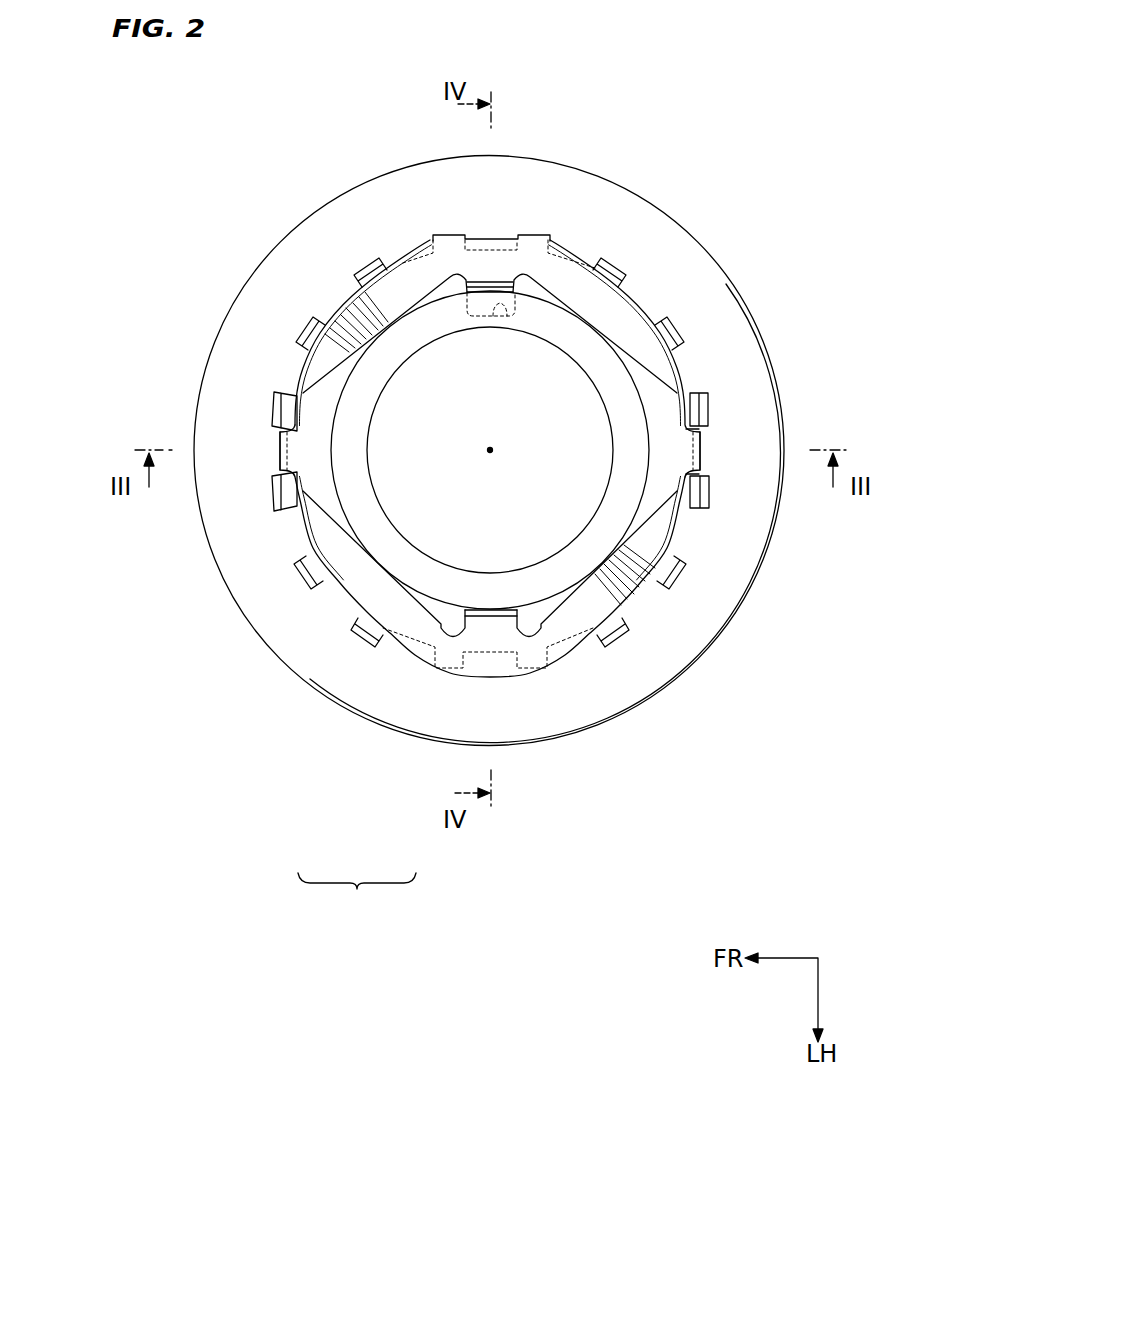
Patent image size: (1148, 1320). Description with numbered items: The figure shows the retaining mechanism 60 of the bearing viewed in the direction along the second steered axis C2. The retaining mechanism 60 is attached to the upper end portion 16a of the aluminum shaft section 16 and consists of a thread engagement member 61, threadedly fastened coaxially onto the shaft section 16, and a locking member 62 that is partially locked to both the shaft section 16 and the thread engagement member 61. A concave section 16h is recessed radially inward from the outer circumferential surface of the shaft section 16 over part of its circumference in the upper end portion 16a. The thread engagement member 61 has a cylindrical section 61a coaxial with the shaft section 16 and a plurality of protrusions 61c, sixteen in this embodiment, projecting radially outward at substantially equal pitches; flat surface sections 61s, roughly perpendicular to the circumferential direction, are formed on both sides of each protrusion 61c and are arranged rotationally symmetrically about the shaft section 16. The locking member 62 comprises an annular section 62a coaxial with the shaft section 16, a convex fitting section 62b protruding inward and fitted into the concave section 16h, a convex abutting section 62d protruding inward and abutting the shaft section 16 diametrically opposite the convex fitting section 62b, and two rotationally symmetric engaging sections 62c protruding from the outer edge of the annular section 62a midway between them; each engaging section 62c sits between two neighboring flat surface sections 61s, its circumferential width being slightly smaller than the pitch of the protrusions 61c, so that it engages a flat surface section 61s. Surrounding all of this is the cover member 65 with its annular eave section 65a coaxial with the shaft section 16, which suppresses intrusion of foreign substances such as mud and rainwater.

The shaft section 16 is at (598, 388).
The upper end portion of the shaft section 16a is at (610, 340).
The concave section 16h is at (507, 318).
The retaining mechanism 60 is at (357, 898).
The thread engagement member 61 is at (364, 646).
The cylindrical section 61a is at (708, 493).
The protrusions 61c is at (708, 504).
The flat surface sections 61s is at (710, 430).
The locking member 62 is at (483, 684).
The annular section 62a is at (657, 383).
The convex fitting section 62b is at (483, 303).
The engaging section 62c is at (277, 448).
The convex abutting section 62d is at (487, 608).
The cover member 65 is at (712, 672).
The annular eave section 65a is at (687, 622).
The second steered axis C2 is at (490, 450).